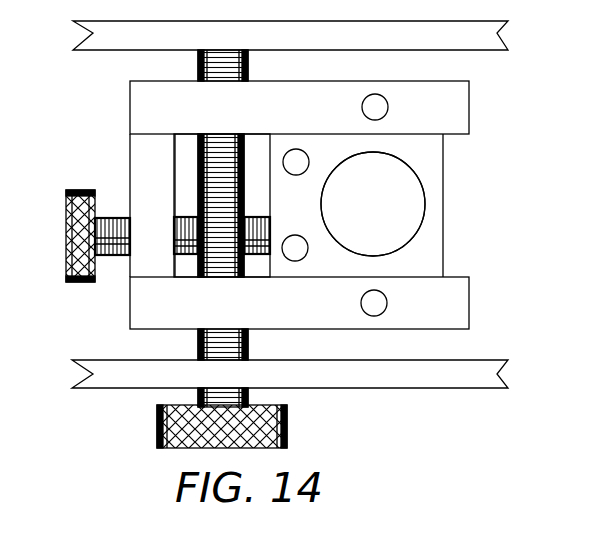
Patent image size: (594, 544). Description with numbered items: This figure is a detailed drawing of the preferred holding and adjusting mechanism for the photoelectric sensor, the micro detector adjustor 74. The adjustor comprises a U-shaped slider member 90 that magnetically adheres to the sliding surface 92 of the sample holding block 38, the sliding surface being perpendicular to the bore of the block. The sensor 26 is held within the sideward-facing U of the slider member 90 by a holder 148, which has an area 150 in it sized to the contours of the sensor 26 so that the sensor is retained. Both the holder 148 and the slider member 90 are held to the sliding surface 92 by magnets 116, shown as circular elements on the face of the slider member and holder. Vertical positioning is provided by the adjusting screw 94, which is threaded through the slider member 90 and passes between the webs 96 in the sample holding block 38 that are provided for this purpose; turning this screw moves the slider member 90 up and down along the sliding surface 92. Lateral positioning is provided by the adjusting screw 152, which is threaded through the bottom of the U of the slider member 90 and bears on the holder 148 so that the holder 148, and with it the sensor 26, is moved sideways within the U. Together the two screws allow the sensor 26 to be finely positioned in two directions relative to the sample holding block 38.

The webs 96 is at (473, 35).
The sample holding block 38 is at (445, 65).
The micro detector adjustor 74 is at (500, 133).
The U-shaped slider member 90 is at (146, 303).
The holder 148 is at (428, 244).
The sensor 26 is at (392, 202).
The area 150 is at (373, 152).
The magnets 116 is at (290, 150).
The sliding surface 92 is at (420, 344).
The adjusting screw 152 is at (112, 217).
The adjusting screw 94 is at (193, 395).